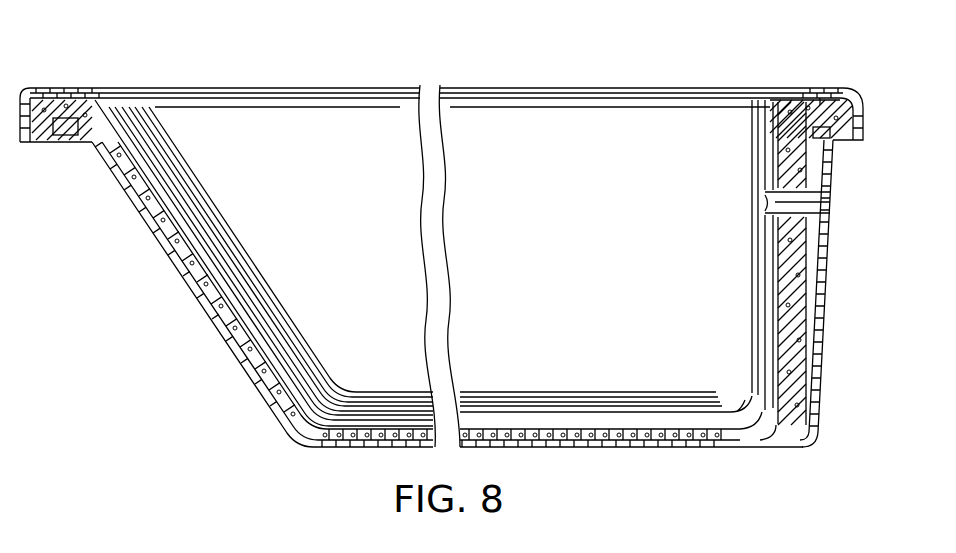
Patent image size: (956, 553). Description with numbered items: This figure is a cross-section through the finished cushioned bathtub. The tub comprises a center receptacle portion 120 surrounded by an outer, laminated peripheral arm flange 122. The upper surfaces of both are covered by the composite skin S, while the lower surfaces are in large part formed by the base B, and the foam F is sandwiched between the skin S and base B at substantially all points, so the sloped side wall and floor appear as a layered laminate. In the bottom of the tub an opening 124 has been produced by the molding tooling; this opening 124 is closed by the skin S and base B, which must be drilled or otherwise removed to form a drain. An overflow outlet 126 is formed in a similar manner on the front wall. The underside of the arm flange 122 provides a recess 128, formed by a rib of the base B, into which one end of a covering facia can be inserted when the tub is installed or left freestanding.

The center receptacle portion 120 is at (510, 148).
The arm flange 122 is at (862, 88).
The opening 124 is at (740, 407).
The overflow outlet 126 is at (812, 203).
The recess 128 is at (63, 146).
The composite skin S is at (223, 259).
The base B is at (172, 283).
The foam F is at (263, 357).